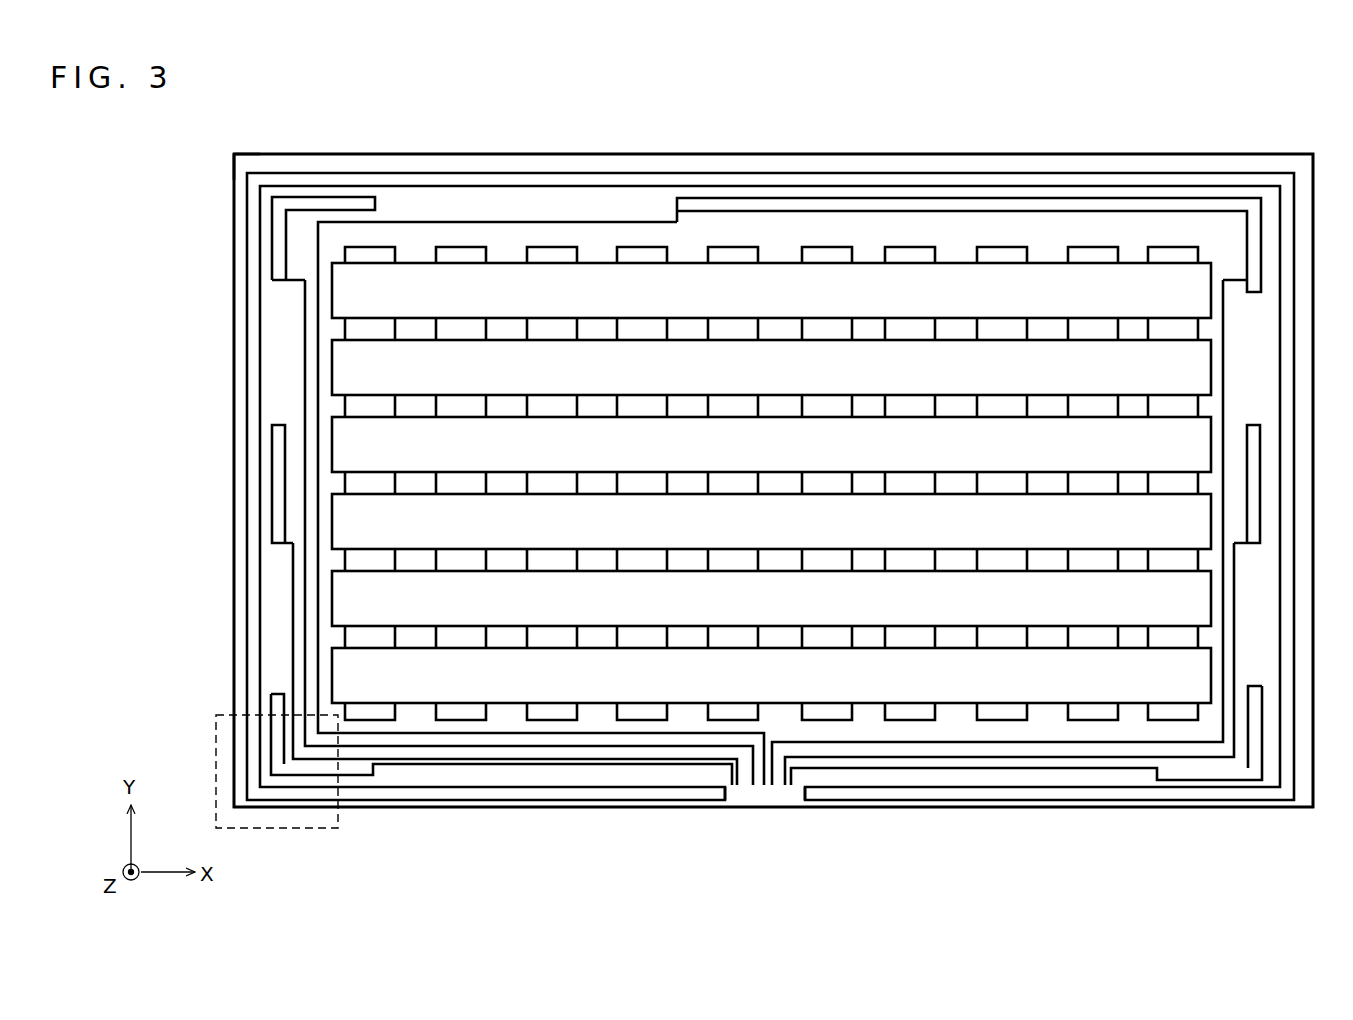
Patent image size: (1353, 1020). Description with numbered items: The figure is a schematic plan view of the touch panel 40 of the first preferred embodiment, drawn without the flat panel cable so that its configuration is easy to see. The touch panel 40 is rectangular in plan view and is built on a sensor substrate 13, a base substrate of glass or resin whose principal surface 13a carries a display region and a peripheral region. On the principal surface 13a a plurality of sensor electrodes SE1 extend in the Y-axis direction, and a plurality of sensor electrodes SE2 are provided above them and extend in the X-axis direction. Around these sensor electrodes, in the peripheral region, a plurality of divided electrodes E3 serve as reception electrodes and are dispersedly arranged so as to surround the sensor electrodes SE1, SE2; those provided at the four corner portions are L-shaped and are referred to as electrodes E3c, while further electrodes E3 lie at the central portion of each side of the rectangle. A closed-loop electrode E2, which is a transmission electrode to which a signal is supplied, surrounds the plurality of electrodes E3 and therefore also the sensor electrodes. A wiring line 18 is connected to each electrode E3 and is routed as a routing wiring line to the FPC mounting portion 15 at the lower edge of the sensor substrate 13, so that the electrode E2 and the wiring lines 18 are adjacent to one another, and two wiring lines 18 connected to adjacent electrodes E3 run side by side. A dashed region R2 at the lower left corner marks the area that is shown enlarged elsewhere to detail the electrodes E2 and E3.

The touch panel 40 is at (1302, 124).
The sensor substrate 13 is at (234, 160).
The principal surface 13a is at (272, 160).
The electrode E2 is at (247, 460).
The electrode E3 is at (272, 500).
The electrode E3c is at (272, 237).
The wiring line 18 is at (305, 372).
The sensor electrodes SE1 is at (455, 247).
The sensor electrodes SE2 is at (505, 280).
The FPC mounting portion 15 is at (805, 810).
The region R2 is at (294, 829).